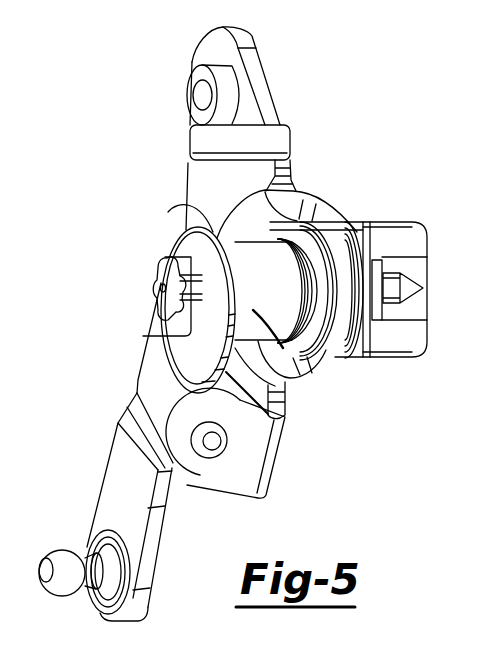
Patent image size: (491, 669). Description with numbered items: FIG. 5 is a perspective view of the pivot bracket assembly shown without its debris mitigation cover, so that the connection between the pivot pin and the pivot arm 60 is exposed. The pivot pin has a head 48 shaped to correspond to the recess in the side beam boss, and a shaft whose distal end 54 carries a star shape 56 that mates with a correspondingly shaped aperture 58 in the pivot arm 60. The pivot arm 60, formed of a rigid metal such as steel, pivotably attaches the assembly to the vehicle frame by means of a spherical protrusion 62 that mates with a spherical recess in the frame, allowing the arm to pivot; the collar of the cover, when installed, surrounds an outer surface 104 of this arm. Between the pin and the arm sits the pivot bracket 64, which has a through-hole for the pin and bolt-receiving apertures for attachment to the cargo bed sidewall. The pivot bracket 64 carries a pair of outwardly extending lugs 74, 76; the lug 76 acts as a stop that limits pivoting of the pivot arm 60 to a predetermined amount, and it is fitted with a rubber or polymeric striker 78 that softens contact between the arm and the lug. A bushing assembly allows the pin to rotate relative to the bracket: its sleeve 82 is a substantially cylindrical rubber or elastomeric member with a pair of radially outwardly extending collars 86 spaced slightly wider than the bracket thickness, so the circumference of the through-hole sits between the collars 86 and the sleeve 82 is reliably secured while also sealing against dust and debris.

The head 48 is at (402, 265).
The distal end 54 is at (163, 288).
The star shape 56 is at (163, 288).
The aperture 58 is at (143, 336).
The pivot arm 60 is at (142, 626).
The spherical protrusion 62 is at (68, 592).
The pivot bracket 64 is at (266, 30).
The lug 74 is at (217, 135).
The lug 76 is at (246, 460).
The striker 78 is at (214, 445).
The sleeve 82 is at (285, 388).
The collars 86 is at (360, 250).
The outer surface 104 is at (183, 207).